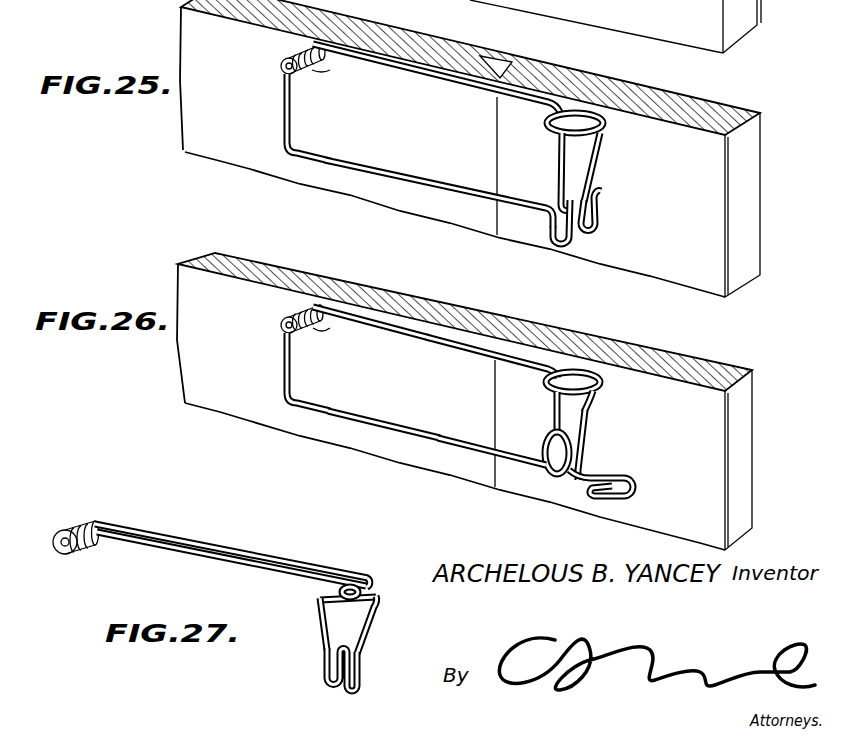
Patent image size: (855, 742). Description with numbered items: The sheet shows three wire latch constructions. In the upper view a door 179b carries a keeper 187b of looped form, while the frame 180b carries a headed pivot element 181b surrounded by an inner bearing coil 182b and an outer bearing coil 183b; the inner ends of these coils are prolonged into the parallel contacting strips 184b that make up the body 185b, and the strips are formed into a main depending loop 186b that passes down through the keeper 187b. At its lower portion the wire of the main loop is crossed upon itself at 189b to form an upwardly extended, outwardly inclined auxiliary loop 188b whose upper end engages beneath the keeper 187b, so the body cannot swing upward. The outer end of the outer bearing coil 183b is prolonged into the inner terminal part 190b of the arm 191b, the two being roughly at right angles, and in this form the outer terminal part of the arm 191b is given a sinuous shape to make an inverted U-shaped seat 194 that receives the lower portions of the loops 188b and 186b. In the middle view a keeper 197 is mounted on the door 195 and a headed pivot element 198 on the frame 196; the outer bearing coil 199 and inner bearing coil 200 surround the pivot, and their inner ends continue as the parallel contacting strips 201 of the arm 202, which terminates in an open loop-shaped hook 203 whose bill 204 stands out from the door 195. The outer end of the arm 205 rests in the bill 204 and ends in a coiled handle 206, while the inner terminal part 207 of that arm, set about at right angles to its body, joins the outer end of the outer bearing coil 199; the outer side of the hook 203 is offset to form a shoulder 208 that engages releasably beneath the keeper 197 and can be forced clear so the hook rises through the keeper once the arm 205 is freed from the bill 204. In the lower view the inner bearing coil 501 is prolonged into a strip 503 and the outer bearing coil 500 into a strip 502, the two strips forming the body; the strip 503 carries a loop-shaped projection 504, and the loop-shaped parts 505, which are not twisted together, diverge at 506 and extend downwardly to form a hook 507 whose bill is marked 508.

In FIG. 25, the door 179b is at (748, 228).
In FIG. 25, the frame 180b is at (184, 40).
In FIG. 25, the headed pivot element 181b is at (289, 67).
In FIG. 25, the inner bearing coil 182b is at (314, 62).
In FIG. 25, the outer bearing coil 183b is at (302, 78).
In FIG. 25, the parallel contacting strips 184b is at (452, 88).
In FIG. 25, the body 185b is at (494, 54).
In FIG. 25, the main depending loop 186b is at (564, 148).
In FIG. 25, the keeper 187b is at (604, 127).
In FIG. 25, the auxiliary terminal loop 188b is at (599, 160).
In FIG. 25, the crossing 189b is at (572, 250).
In FIG. 25, the inner terminal part of arm 190b is at (284, 117).
In FIG. 25, the arm 191b is at (427, 172).
In FIG. 25, the inverted U-shaped seat 194 is at (552, 228).
In FIG. 26, the door 195 is at (742, 461).
In FIG. 26, the frame 196 is at (188, 378).
In FIG. 26, the keeper 197 is at (600, 383).
In FIG. 26, the headed pivot element 198 is at (283, 331).
In FIG. 26, the outer bearing coil 199 is at (297, 339).
In FIG. 26, the inner bearing coil 200 is at (322, 328).
In FIG. 26, the parallel contacting strips 201 is at (418, 340).
In FIG. 26, the arm 202 is at (456, 330).
In FIG. 26, the open loop-shaped hook 203 is at (583, 448).
In FIG. 26, the bill of hook 204 is at (551, 434).
In FIG. 26, the arm 205 is at (462, 469).
In FIG. 26, the coiled handle 206 is at (597, 493).
In FIG. 26, the inner terminal part of arm 207 is at (288, 384).
In FIG. 26, the shoulder 208 is at (583, 404).
In FIG. 27, the outer bearing coil 500 is at (75, 558).
In FIG. 27, the inner bearing coil 501 is at (98, 545).
In FIG. 27, the strip 502 is at (232, 566).
In FIG. 27, the strip 503 is at (243, 554).
In FIG. 27, the loop-shaped projection 504 is at (377, 575).
In FIG. 27, the loop-shaped parts 505 is at (340, 593).
In FIG. 27, the divergence of loop-shaped parts 506 is at (333, 604).
In FIG. 27, the hook 507 is at (330, 634).
In FIG. 27, the bill of hook 508 is at (322, 668).